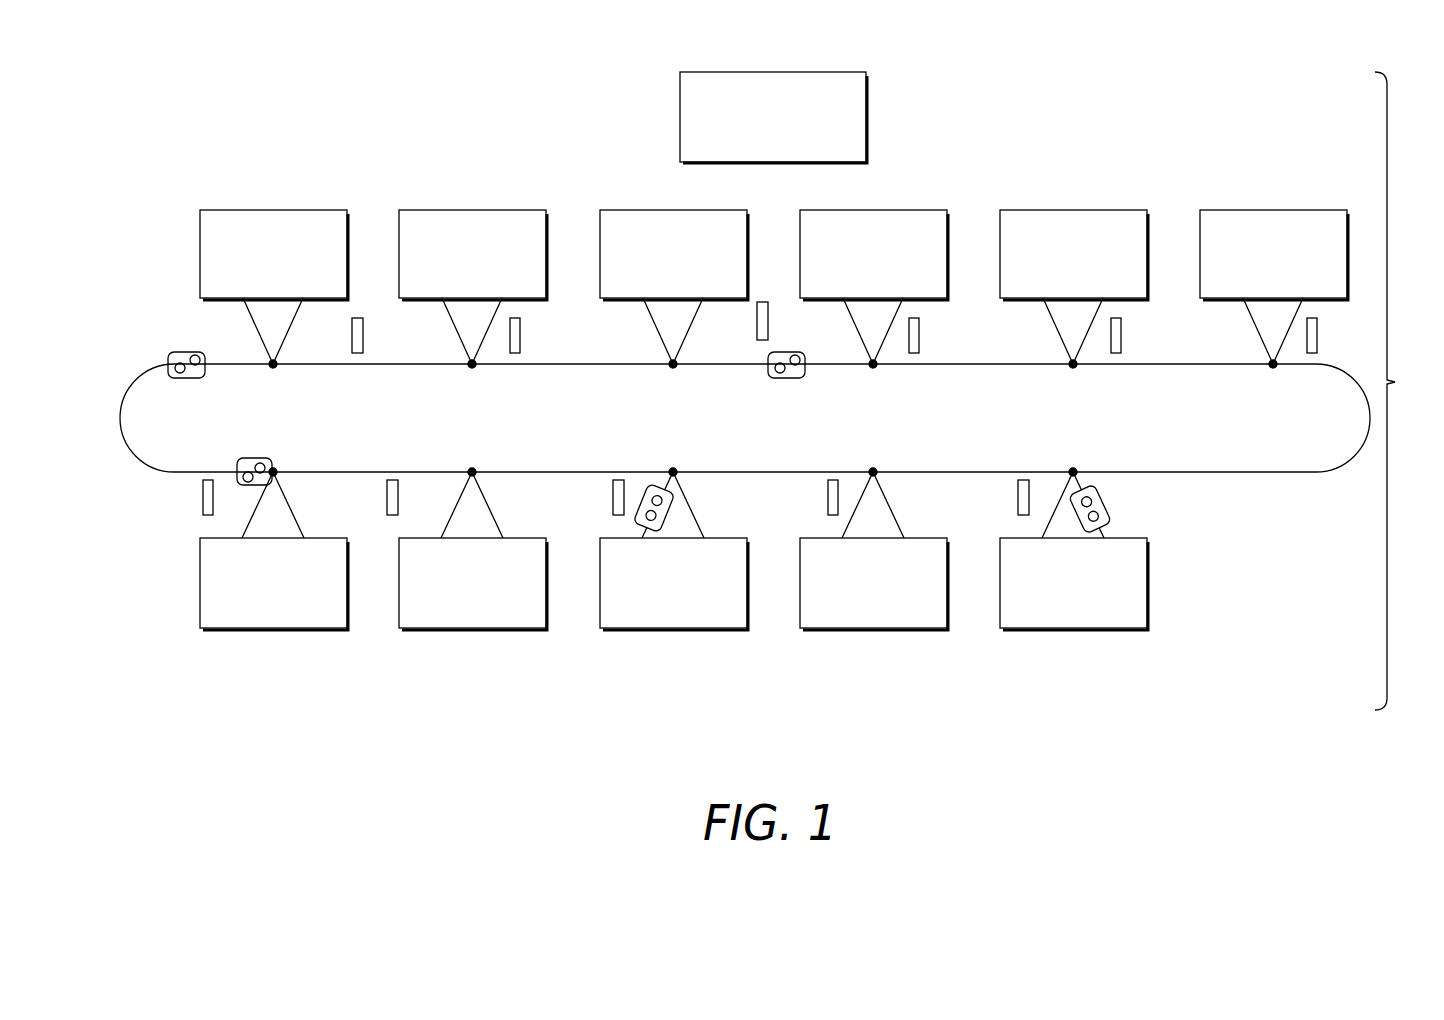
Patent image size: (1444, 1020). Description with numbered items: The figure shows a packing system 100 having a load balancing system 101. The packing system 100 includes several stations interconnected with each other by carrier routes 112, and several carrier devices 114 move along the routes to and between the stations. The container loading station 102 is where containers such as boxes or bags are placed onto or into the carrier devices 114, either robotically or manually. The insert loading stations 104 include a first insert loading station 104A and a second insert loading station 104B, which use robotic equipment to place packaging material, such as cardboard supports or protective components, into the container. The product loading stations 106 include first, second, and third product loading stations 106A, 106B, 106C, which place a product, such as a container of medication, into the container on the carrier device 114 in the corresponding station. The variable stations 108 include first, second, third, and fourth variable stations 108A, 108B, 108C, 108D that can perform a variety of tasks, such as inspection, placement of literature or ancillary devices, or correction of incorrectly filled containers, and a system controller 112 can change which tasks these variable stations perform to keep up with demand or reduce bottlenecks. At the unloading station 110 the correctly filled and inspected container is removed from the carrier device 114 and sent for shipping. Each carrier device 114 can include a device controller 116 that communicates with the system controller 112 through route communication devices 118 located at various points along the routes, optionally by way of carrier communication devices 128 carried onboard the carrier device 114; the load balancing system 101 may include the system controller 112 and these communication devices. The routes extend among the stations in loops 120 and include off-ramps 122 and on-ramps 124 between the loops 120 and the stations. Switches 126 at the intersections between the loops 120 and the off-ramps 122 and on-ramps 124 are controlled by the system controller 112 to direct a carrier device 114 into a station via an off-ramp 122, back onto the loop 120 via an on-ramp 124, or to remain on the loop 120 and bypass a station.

The packing system 100 is at (1403, 391).
The load balancing system 101 is at (649, 68).
The container loading station 102 is at (285, 630).
The insert loading stations 104 is at (455, 666).
The first insert loading station 104A is at (475, 547).
The second insert loading station 104B is at (477, 210).
The product loading stations 106 is at (1075, 667).
The first product loading station 106A is at (685, 630).
The second product loading station 106B is at (876, 546).
The third product loading station 106C is at (1085, 630).
The variable stations 108 is at (610, 184).
The first variable station 108A is at (1278, 210).
The second variable station 108B is at (1074, 302).
The third variable station 108C is at (878, 210).
The fourth variable station 108D is at (678, 210).
The unloading station 110 is at (278, 210).
The carrier routes 112 is at (778, 72).
The carrier devices 114 is at (786, 378).
The device controllers 116 is at (180, 378).
The route communication devices 118 is at (357, 353).
The loops 120 is at (153, 472).
The off-ramps 122 is at (460, 497).
The on-ramps 124 is at (888, 505).
The switches 126 is at (1073, 368).
The carrier communication devices 128 is at (170, 375).